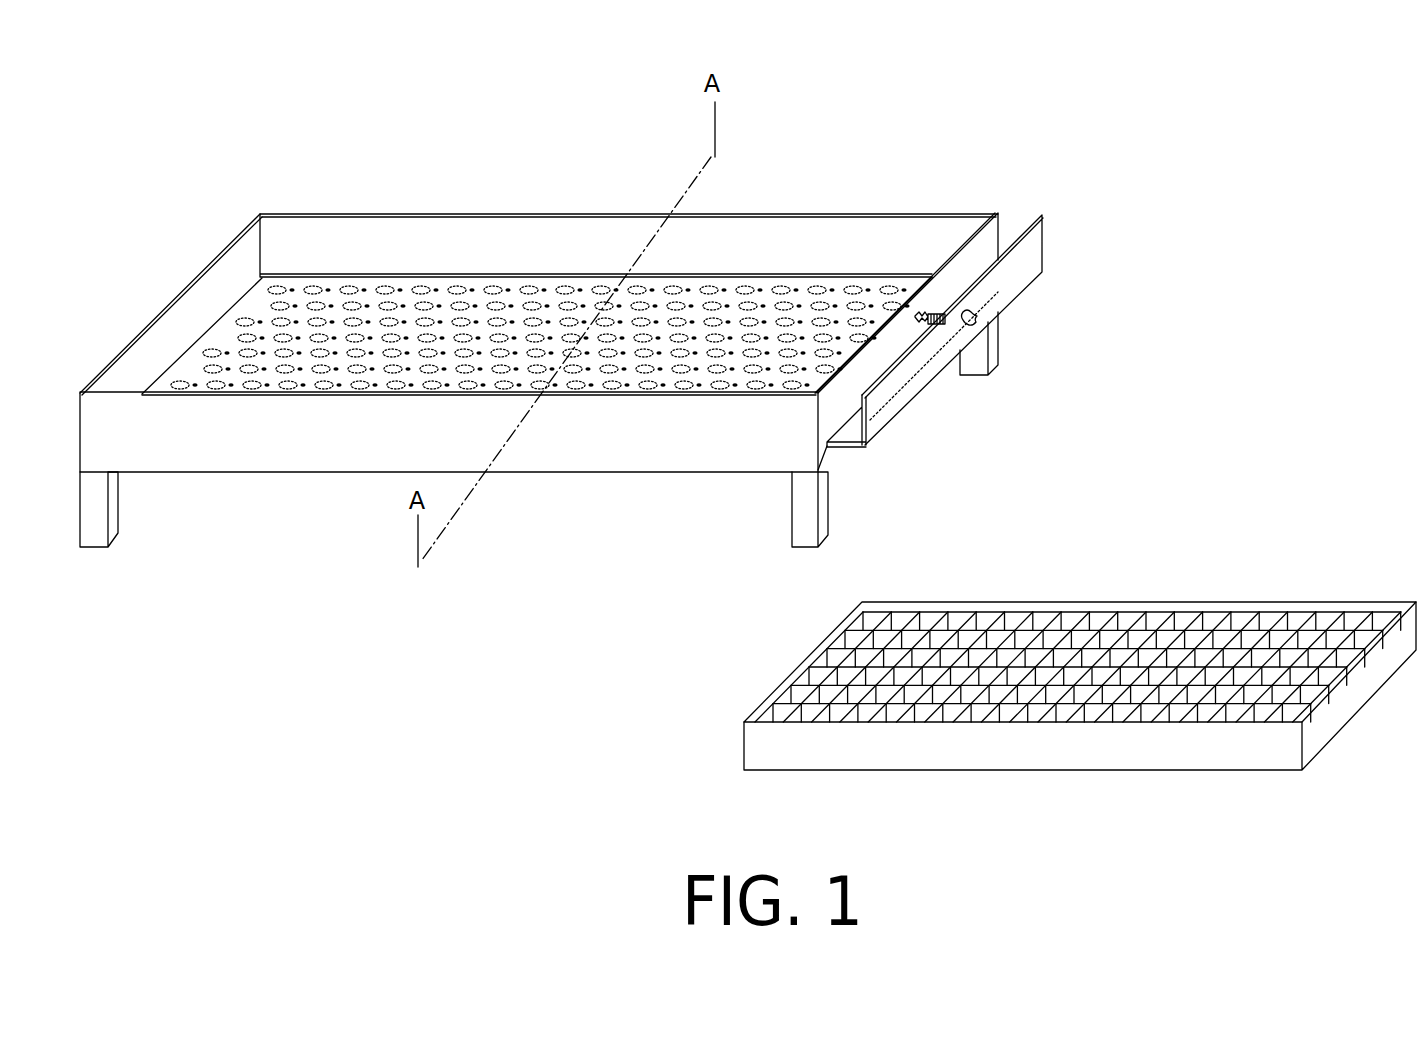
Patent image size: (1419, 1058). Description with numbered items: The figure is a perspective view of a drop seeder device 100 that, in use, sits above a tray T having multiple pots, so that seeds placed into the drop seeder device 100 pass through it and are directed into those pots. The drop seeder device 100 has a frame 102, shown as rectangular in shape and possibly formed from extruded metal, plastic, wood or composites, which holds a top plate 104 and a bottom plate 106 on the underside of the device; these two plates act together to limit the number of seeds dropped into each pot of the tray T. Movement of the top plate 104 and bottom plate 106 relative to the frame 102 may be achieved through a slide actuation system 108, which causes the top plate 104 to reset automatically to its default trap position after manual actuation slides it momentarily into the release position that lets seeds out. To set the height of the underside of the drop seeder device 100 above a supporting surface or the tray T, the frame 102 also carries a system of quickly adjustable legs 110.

The drop seeder device 100 is at (998, 129).
The frame 102 is at (467, 240).
The top plate 104 is at (255, 300).
The bottom plate 106 is at (624, 483).
The slide actuation system 108 is at (956, 342).
The adjustable legs 110 is at (113, 525).
The tray T is at (1099, 571).